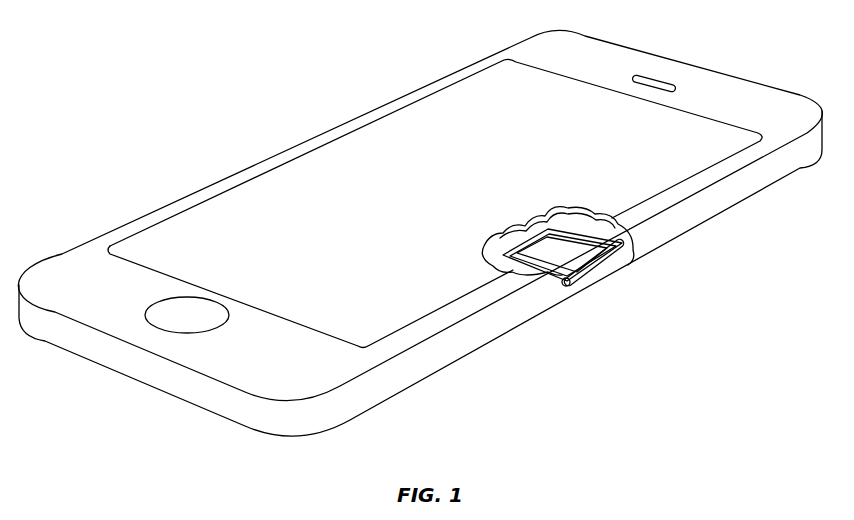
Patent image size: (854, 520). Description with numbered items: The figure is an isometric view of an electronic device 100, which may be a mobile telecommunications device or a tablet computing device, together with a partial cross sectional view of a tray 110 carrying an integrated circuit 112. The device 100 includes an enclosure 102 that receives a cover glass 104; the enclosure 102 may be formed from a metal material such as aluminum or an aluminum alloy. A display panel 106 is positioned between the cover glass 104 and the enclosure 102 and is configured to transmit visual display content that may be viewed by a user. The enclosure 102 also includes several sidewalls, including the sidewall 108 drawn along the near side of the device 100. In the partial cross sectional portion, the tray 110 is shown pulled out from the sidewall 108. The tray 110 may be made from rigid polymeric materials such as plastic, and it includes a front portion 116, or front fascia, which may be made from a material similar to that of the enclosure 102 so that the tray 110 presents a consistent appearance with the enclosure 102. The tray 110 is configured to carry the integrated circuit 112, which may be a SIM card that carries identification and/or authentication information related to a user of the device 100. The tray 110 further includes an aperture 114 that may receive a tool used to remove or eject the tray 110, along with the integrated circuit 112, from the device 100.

The electronic device 100 is at (213, 84).
The enclosure 102 is at (730, 234).
The cover glass 104 is at (100, 267).
The display panel 106 is at (409, 206).
The sidewall 108 is at (480, 325).
The tray 110 is at (518, 246).
The integrated circuit 112 is at (558, 253).
The aperture 114 is at (582, 300).
The front portion 116 is at (628, 280).